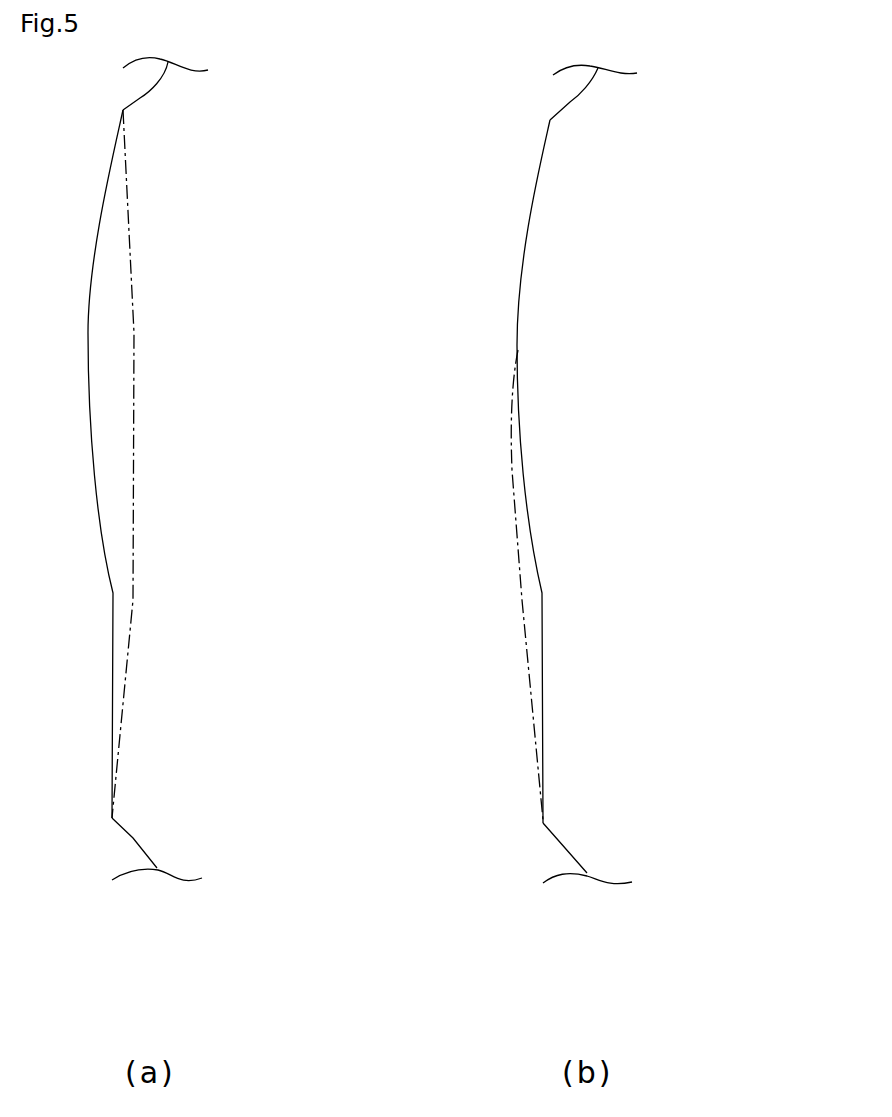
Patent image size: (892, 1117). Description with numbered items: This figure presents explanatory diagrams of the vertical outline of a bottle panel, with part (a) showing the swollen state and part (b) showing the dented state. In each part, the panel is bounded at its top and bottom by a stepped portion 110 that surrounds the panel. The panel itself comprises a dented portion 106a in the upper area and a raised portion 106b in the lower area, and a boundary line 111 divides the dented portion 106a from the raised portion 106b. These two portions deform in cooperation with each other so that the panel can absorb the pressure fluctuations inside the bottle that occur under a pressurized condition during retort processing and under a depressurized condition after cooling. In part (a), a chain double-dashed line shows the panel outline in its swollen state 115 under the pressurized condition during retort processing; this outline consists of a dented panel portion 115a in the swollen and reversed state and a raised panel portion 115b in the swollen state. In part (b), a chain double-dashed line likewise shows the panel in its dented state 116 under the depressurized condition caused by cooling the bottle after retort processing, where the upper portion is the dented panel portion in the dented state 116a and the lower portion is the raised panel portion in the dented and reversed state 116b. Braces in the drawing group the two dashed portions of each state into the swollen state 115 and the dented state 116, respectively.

The stepped portion 110 is at (140, 98).
The dented portion 106a is at (88, 333).
The raised portion 106b is at (112, 698).
The boundary line 111 is at (113, 593).
The swollen state 115 is at (375, 347).
The dented panel portion in the swollen and reversed state 115a is at (137, 380).
The raised panel portion in the swollen state 115b is at (130, 670).
The dented state 116 is at (745, 360).
The dented panel portion in the dented state 116a is at (513, 445).
The raised panel portion in the dented and reversed state 116b is at (550, 670).